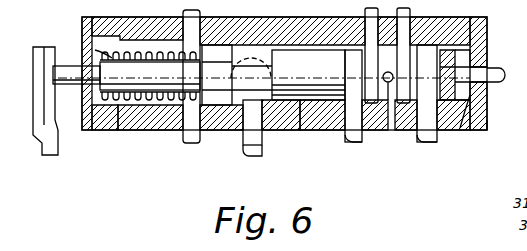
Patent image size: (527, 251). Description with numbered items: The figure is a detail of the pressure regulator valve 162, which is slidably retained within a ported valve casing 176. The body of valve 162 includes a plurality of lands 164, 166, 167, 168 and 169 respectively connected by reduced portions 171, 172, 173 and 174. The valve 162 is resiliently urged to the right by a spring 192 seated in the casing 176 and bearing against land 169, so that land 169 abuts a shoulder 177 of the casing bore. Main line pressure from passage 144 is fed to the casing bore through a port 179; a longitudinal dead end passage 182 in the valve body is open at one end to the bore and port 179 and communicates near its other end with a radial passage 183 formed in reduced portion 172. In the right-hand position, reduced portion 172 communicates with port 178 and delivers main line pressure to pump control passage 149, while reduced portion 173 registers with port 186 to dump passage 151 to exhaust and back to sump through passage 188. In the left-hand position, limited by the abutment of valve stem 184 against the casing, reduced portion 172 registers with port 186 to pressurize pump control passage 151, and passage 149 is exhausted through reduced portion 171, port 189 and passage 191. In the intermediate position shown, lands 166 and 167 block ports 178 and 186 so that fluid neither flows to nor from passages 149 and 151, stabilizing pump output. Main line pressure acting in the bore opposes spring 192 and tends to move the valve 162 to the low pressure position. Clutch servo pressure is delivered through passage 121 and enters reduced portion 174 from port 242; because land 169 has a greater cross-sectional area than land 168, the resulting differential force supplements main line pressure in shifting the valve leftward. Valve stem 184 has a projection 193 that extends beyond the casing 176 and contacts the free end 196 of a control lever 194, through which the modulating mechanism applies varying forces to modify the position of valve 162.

The passage 121 is at (252, 157).
The passage 144 is at (480, 86).
The pump control passage 149 is at (404, 42).
The pump control passage 151 is at (352, 25).
The regulator valve 162 is at (110, 55).
The land 164 is at (484, 131).
The land 166 is at (426, 144).
The land 167 is at (353, 143).
The land 168 is at (282, 128).
The land 169 is at (192, 144).
The reduced portion 171 is at (470, 48).
The reduced portion 172 is at (344, 92).
The reduced portion 173 is at (323, 65).
The reduced portion 174 is at (262, 120).
The valve casing 176 is at (305, 128).
The shoulder 177 is at (200, 72).
The port 178 is at (397, 131).
The port 179 is at (503, 73).
The longitudinal dead end passage 182 is at (476, 62).
The radial passage 183 is at (373, 128).
The valve stem 184 is at (142, 128).
The port 186 is at (344, 74).
The passage 188 is at (350, 131).
The port 189 is at (432, 112).
The passage 191 is at (432, 142).
The spring 192 is at (110, 128).
The projection 193 is at (70, 84).
The control lever 194 is at (48, 156).
The free end 196 is at (44, 62).
The port 242 is at (218, 108).